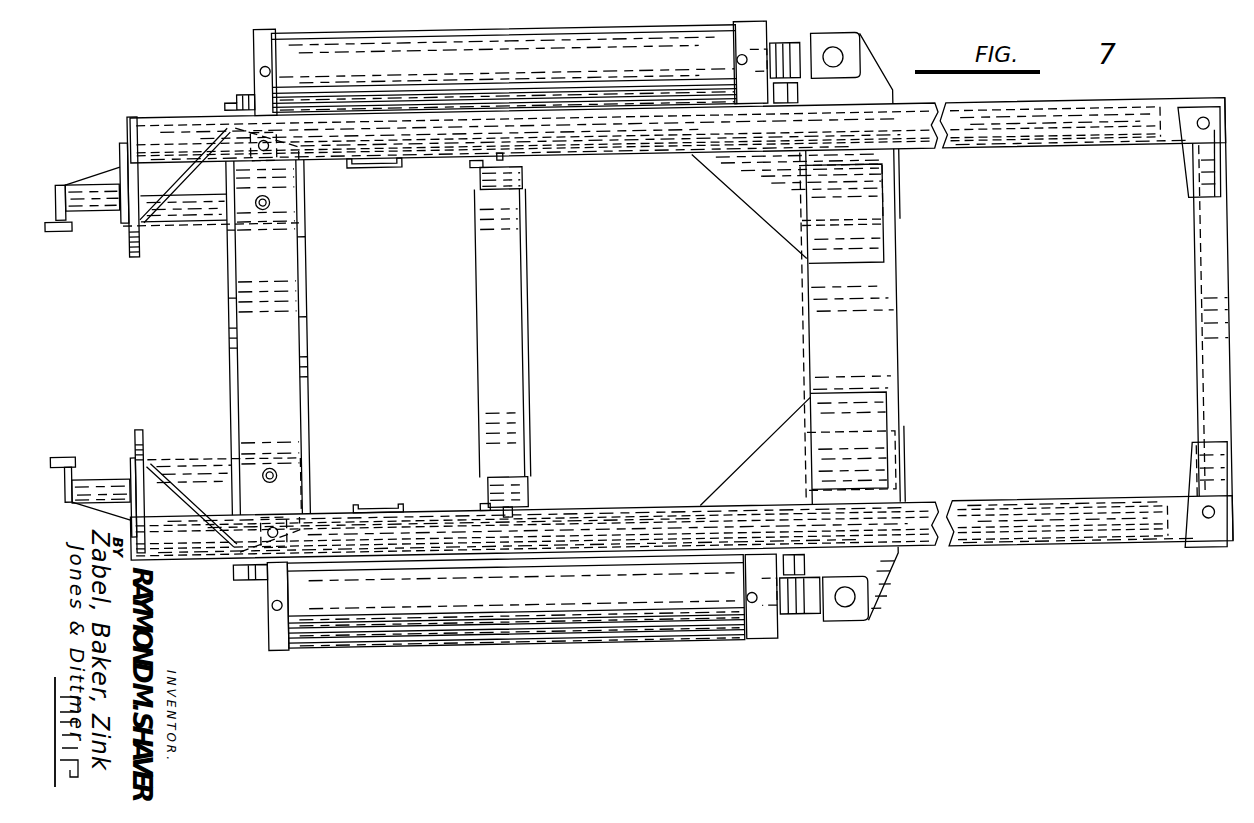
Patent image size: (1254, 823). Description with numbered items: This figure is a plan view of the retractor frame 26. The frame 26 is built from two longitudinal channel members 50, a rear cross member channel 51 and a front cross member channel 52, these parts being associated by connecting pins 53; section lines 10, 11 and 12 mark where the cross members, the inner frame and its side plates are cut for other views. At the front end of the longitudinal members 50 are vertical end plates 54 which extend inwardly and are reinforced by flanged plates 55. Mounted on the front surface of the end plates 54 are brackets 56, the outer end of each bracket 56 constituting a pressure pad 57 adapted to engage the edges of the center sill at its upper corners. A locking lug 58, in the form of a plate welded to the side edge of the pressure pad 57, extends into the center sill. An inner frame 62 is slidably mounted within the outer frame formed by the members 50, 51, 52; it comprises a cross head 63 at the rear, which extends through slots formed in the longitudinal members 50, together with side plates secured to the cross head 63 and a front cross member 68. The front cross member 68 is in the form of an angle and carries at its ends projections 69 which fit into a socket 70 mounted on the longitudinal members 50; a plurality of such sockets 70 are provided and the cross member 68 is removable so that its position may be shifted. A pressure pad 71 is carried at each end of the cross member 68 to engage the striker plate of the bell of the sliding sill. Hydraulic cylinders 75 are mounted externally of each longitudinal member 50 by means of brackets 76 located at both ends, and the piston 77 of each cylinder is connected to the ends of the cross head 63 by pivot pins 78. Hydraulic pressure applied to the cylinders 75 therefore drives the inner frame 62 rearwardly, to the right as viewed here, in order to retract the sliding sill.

The section line 10- 10 is at (48, 371).
The section line 11- 11 is at (533, 474).
The section line 12- 12 is at (907, 427).
The retractor frame 26 is at (1155, 93).
The longitudinal channel members 50 is at (1161, 128).
The rear cross member channel 51 is at (1208, 242).
The front cross member channel 52 is at (301, 303).
The connecting pins 53 is at (1199, 148).
The vertical end plates 54 is at (138, 242).
The flanged plates 55 is at (198, 214).
The brackets 56 is at (106, 211).
The pressure pad 57 is at (55, 198).
The locking lug 58 is at (59, 231).
The inner frame 62 is at (907, 284).
The cross head 63 is at (862, 346).
The front cross member 68 is at (525, 418).
The projections 69 is at (477, 176).
The socket 70 is at (377, 173).
The pressure pad 71 is at (516, 186).
The hydraulic cylinders 75 is at (649, 79).
The brackets 76 is at (260, 38).
The piston 77 is at (784, 67).
The pivot pins 78 is at (834, 64).